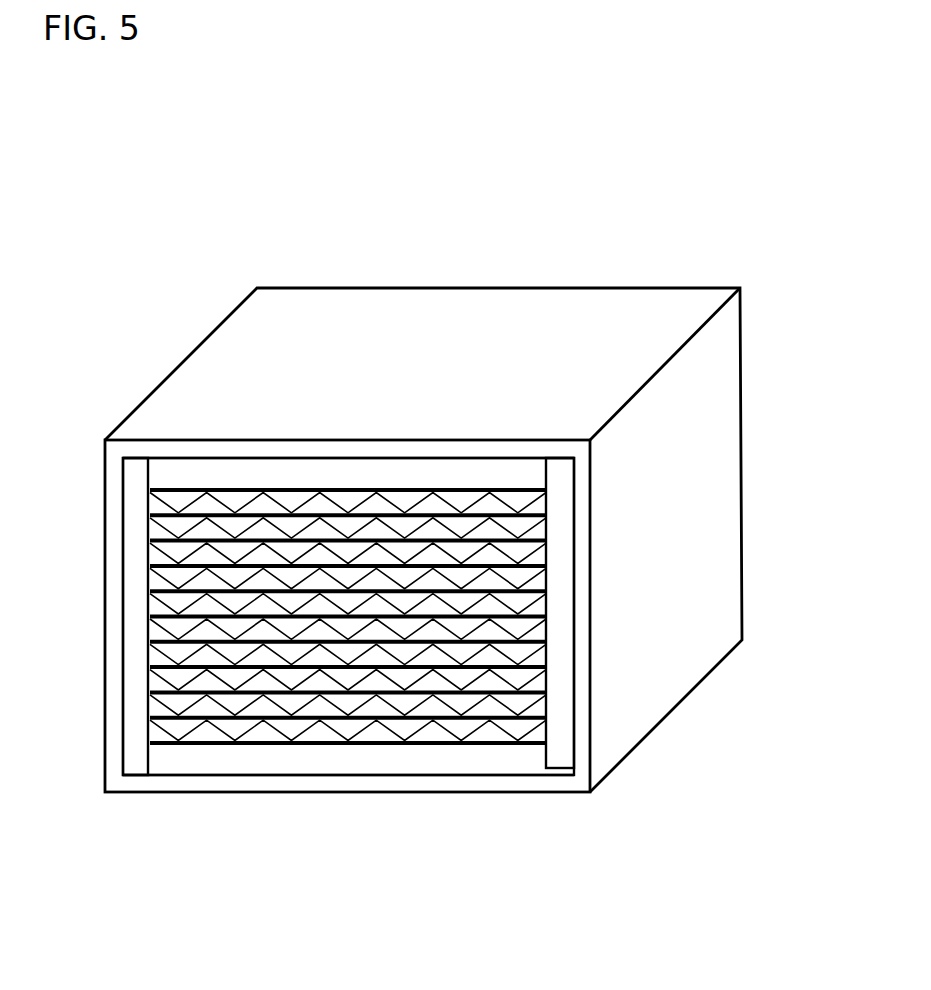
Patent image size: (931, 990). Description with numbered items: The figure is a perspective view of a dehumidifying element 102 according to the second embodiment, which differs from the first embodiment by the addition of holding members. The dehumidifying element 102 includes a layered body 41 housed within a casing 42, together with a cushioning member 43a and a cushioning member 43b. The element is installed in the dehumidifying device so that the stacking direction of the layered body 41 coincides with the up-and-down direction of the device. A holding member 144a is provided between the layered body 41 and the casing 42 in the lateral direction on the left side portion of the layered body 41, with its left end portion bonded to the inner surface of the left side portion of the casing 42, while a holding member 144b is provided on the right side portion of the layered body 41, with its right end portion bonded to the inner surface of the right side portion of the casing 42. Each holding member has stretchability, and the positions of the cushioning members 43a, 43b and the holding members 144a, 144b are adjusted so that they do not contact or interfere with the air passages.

The dehumidifying element 102 is at (732, 218).
The casing 42 is at (741, 537).
The layered body 41 is at (153, 583).
The cushioning member 43a is at (153, 473).
The cushioning member 43b is at (157, 755).
The holding member 144a is at (140, 658).
The holding member 144b is at (568, 738).